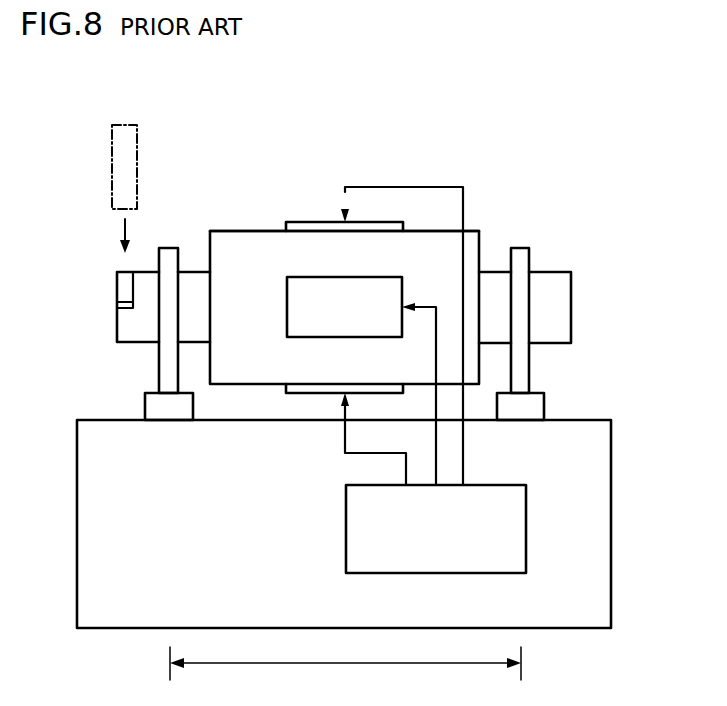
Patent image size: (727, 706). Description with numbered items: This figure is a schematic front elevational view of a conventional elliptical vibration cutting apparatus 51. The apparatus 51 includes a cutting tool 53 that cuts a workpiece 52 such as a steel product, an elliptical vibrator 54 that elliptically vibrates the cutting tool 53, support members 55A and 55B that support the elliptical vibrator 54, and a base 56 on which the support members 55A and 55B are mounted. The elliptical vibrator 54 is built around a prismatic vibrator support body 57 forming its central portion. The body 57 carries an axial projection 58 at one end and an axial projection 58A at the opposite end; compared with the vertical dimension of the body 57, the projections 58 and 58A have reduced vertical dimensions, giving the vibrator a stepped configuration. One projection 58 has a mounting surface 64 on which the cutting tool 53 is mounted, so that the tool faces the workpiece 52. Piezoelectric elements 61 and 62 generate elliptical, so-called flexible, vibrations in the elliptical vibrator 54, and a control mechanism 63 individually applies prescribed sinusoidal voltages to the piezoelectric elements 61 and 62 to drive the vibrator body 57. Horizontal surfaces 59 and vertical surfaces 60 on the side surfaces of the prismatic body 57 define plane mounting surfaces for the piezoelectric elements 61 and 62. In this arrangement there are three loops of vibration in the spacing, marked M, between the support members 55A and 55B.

The apparatus 51 is at (501, 119).
The workpiece 52 is at (115, 139).
The cutting tool 53 is at (117, 304).
The elliptical vibrator 54 is at (260, 157).
The support member 55A is at (163, 371).
The support member 55B is at (524, 369).
The base 56 is at (588, 470).
The vibrator support body 57 is at (240, 248).
The axial projection 58 is at (195, 285).
The axial projection 58A is at (551, 303).
The horizontal surface 59 is at (273, 231).
The vertical surface 60 is at (248, 357).
The piezoelectric element 61 is at (314, 227).
The piezoelectric element 62 is at (360, 322).
The control mechanism 63 is at (450, 542).
The mounting surface 64 is at (117, 285).